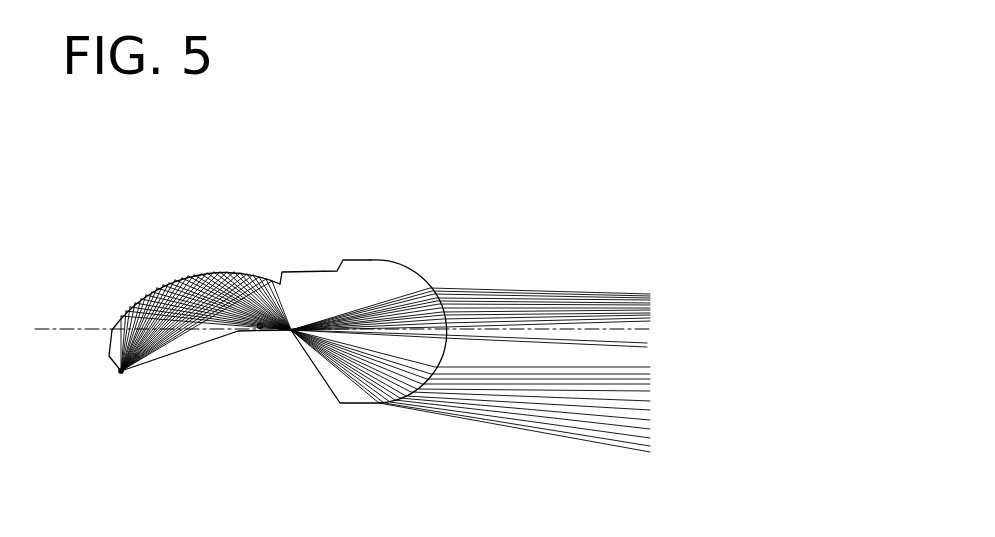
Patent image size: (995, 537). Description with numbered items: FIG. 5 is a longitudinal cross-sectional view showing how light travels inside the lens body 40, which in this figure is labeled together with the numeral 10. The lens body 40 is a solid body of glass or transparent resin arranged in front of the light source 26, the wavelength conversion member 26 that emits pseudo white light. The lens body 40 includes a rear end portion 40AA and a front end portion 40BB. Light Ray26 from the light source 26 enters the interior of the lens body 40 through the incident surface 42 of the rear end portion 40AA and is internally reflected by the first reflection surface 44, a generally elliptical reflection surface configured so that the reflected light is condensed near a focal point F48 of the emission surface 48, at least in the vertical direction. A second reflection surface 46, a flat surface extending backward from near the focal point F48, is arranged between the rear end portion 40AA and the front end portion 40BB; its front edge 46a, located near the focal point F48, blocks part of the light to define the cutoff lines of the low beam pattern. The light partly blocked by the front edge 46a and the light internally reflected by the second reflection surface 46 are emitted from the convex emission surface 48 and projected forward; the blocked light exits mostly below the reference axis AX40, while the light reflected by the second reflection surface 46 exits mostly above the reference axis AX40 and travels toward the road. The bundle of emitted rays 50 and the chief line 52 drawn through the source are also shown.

The lens 10 is at (263, 291).
The lens body 40 is at (263, 291).
The rear end portion 40AA is at (210, 321).
The front end portion 40BB is at (364, 310).
The incident surface 42 is at (118, 371).
The first reflection surface 44 is at (201, 281).
The second reflection surface 46 is at (260, 329).
The front edge 46a is at (291, 327).
The emission surface 48 is at (432, 283).
The exit light rays 50 is at (357, 354).
The chief ray line 52 is at (186, 347).
The wavelength conversion member 26 is at (120, 375).
The light from the light source Ray26 is at (118, 346).
The focal point of the emission surface F48 is at (291, 333).
The reference axis AX40 is at (595, 326).